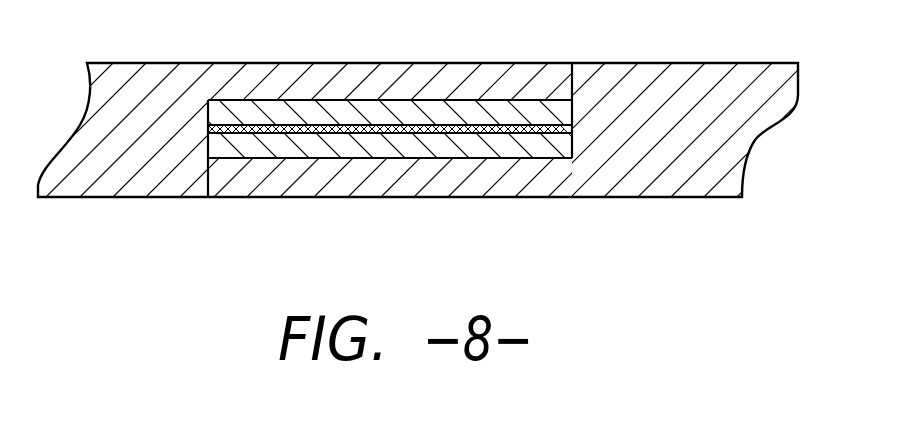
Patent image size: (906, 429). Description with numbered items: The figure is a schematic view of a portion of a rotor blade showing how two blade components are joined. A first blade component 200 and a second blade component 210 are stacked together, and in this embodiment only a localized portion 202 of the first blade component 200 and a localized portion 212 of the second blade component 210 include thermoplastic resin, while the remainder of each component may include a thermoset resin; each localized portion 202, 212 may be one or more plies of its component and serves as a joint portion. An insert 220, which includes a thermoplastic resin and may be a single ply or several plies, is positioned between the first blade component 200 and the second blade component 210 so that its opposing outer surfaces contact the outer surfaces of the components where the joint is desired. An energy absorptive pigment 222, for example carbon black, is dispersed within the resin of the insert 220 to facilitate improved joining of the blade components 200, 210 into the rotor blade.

The first blade component 200 is at (452, 132).
The localized portion 202 is at (405, 116).
The second blade component 210 is at (651, 199).
The localized portion 212 is at (500, 160).
The insert 220 is at (300, 137).
The energy absorptive pigment 222 is at (384, 130).